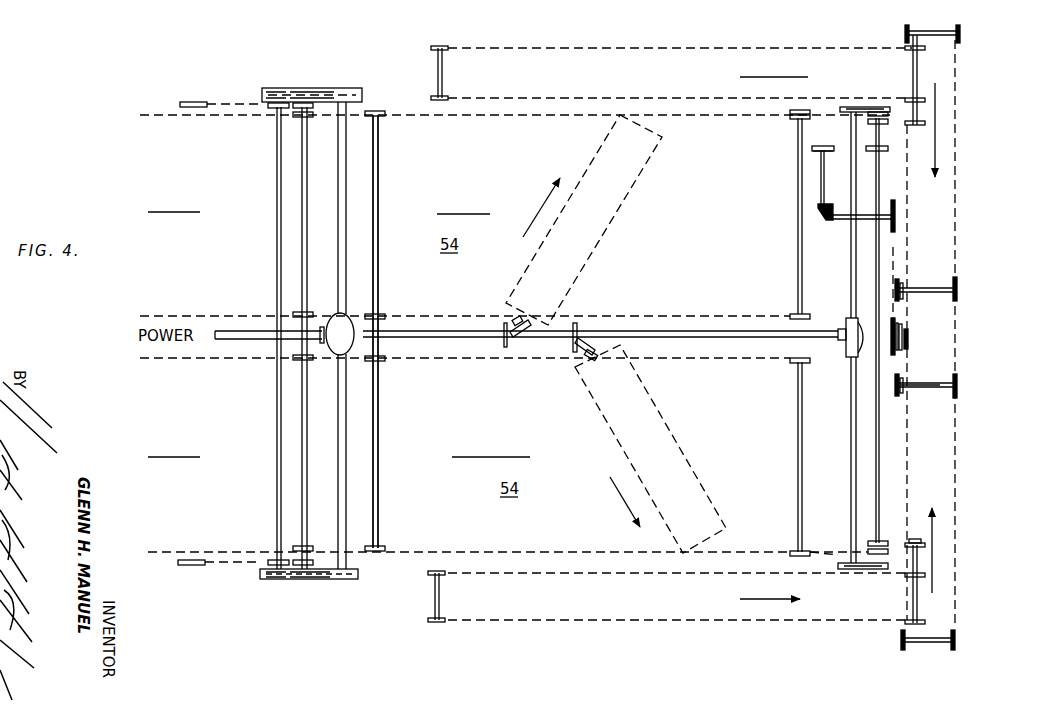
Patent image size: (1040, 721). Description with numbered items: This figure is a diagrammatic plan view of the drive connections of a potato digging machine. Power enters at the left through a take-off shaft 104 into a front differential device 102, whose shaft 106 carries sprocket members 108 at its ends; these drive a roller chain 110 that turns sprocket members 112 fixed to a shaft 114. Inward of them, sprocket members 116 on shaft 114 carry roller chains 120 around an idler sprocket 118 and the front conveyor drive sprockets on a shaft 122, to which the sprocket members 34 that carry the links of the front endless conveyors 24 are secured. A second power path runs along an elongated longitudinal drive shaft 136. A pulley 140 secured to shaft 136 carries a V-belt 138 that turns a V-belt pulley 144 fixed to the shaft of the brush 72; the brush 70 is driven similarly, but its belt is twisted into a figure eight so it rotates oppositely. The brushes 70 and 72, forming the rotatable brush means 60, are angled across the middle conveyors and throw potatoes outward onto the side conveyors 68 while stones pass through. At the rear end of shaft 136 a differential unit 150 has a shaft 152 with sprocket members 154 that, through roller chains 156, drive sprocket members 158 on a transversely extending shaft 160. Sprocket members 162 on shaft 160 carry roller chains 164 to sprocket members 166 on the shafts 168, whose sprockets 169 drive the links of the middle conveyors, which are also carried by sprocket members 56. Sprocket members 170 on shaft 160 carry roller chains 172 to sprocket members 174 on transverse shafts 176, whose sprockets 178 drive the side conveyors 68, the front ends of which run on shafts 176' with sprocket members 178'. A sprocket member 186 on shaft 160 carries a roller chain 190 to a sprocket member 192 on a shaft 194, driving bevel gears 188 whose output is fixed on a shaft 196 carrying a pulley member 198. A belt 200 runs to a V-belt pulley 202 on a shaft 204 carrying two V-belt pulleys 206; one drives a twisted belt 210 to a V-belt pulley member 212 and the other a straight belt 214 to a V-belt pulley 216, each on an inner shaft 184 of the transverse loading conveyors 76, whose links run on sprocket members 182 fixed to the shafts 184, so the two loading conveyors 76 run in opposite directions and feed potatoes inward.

The endless conveyors 24 is at (202, 116).
The sprocket members 34 is at (311, 108).
The sprocket members 56 is at (380, 118).
The rotatable brush means 60 is at (608, 260).
The side conveyors 68 is at (615, 85).
The brush 70 is at (616, 206).
The brush 72 is at (692, 466).
The loading conveyors 76 is at (940, 228).
The front differential device 102 is at (354, 342).
The take-off shaft 104 is at (236, 330).
The front differential device shaft 106 is at (346, 165).
The sprocket members 108 is at (345, 92).
The roller chain 110 is at (318, 90).
The sprocket members 112 is at (280, 90).
The shaft 114 is at (277, 219).
The sprocket members 116 is at (272, 110).
The idler sprocket 118 is at (186, 102).
The roller chains 120 is at (230, 105).
The shaft 122 is at (307, 219).
The drive shaft 136 is at (686, 330).
The V-belt 138 is at (590, 345).
The pulley 140 is at (576, 322).
The V-belt pulley 144 is at (523, 306).
The differential unit 150 is at (846, 356).
The shaft 152 is at (851, 462).
The sprocket members 154 is at (846, 107).
The roller chains 156 is at (840, 565).
The sprocket members 158 is at (868, 107).
The transversely extending shaft 160 is at (851, 258).
The sprocket members 162 is at (888, 114).
The roller chains 164 is at (808, 552).
The sprocket members 166 is at (794, 110).
The shafts 168 is at (378, 181).
The sprockets 169 is at (792, 120).
The sprocket members 170 is at (868, 123).
The roller chains 172 is at (920, 540).
The sprocket members 174 is at (925, 124).
The transverse shafts 176 is at (933, 329).
The shafts 176' is at (461, 334).
The sprockets 178 is at (908, 316).
The sprocket members 178' is at (418, 333).
The sprocket members 182 is at (905, 33).
The shafts 184 is at (940, 33).
The sprocket member 186 is at (886, 152).
The bevel gears 188 is at (816, 208).
The roller chain 190 is at (826, 160).
The sprocket member 192 is at (812, 148).
The shaft 194 is at (820, 166).
The shaft 196 is at (840, 222).
The pulley member 198 is at (896, 208).
The belt 200 is at (895, 258).
The V-belt pulley 202 is at (888, 338).
The shaft 204 is at (910, 342).
The V-belt pulleys 206 is at (904, 332).
The twisted belt 210 is at (890, 328).
The V-belt pulley member 212 is at (905, 286).
The straight belt 214 is at (905, 372).
The V-belt pulley 216 is at (896, 388).